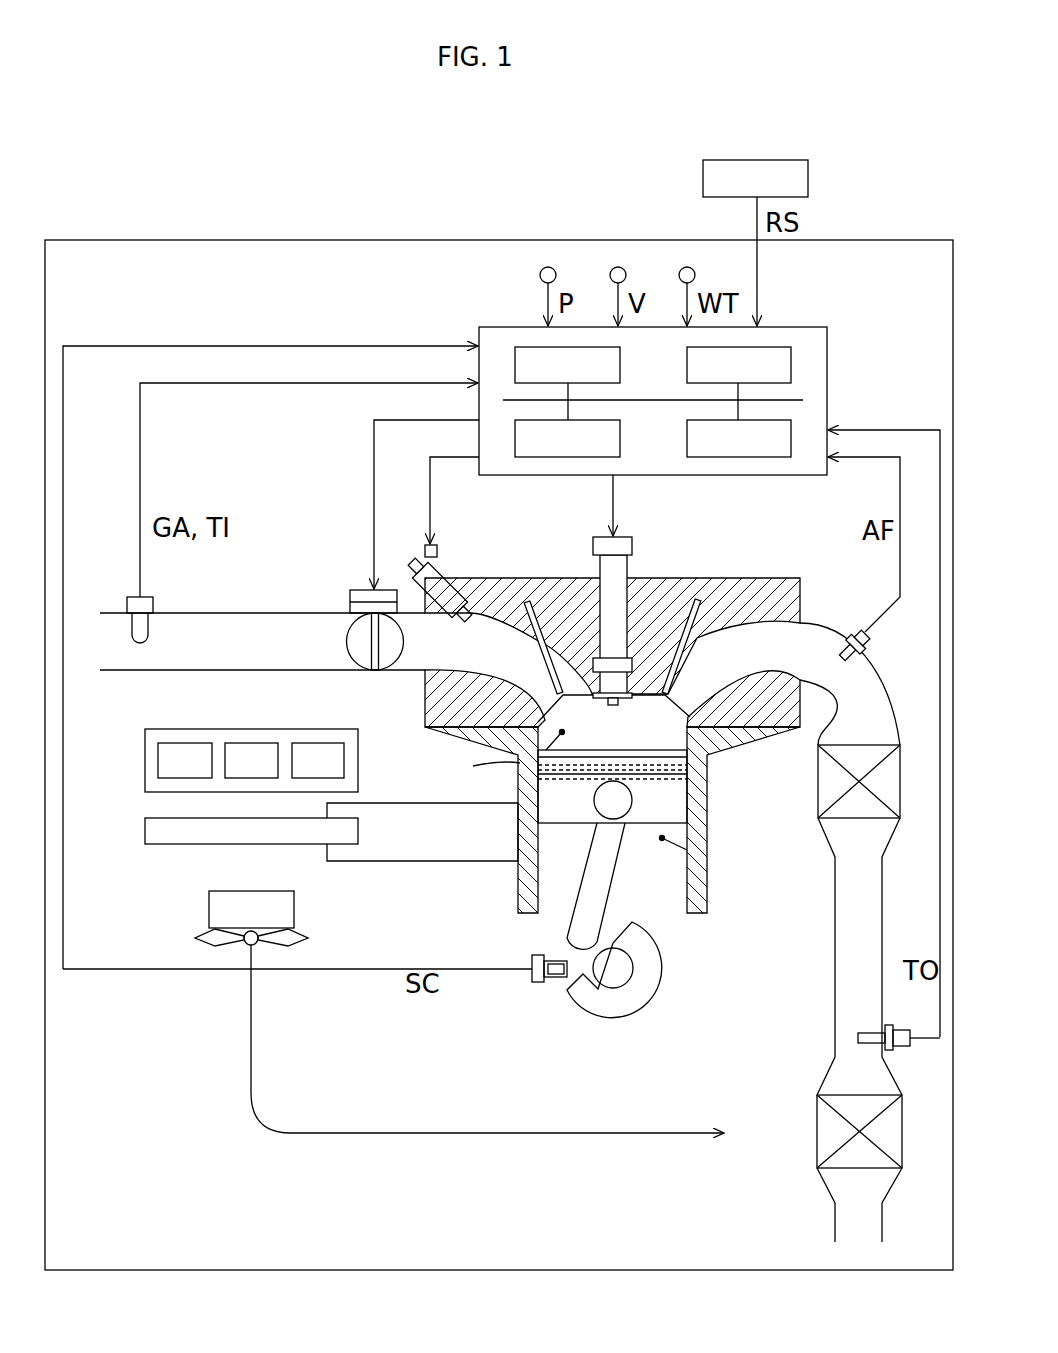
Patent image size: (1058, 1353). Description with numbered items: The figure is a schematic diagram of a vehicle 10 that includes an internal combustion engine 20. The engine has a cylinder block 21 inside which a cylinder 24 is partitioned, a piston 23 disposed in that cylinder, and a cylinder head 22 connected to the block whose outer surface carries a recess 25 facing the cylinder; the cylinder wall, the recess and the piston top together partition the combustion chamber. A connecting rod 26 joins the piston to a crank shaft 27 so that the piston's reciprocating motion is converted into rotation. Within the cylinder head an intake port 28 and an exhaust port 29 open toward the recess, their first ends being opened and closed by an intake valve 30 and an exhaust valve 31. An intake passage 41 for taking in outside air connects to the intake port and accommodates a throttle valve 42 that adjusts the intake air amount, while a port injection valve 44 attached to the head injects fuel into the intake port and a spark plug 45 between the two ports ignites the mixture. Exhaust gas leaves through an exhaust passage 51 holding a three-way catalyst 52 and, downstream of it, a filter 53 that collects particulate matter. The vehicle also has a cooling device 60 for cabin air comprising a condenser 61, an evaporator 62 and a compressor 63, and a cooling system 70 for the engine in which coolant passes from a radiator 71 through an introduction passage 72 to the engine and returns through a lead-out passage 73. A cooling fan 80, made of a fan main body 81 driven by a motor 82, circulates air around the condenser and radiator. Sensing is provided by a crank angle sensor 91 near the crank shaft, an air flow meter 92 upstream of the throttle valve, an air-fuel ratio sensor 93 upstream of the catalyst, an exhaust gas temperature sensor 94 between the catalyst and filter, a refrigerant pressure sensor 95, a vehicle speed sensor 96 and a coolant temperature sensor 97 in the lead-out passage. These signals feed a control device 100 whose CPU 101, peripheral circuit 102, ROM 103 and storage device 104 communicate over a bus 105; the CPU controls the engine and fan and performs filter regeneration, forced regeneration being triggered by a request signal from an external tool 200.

The vehicle 10 is at (78, 239).
The internal combustion engine 20 is at (178, 311).
The cylinder block 21 is at (612, 820).
The cylinder head 22 is at (589, 635).
The piston 23 is at (563, 812).
The cylinder 24 is at (707, 850).
The recess 25 is at (621, 703).
The connecting rod 26 is at (603, 866).
The crank shaft 27 is at (612, 986).
The intake port 28 is at (425, 670).
The exhaust port 29 is at (795, 648).
The intake valve 30 is at (542, 660).
The exhaust valve 31 is at (690, 652).
The intake passage 41 is at (125, 672).
The throttle valve 42 is at (347, 642).
The port injection valve 44 is at (450, 558).
The spark plug 45 is at (605, 580).
The exhaust passage 51 is at (845, 932).
The three-way catalyst 52 is at (818, 783).
The filter 53 is at (817, 1132).
The cooling device 60 is at (213, 741).
The condenser 61 is at (187, 743).
The evaporator 62 is at (252, 743).
The compressor 63 is at (318, 743).
The cooling system 70 is at (292, 860).
The radiator 71 is at (145, 830).
The introduction passage 72 is at (433, 804).
The lead-out passage 73 is at (394, 862).
The cooling fan 80 is at (189, 922).
The fan main body 81 is at (206, 940).
The motor 82 is at (209, 906).
The crank angle sensor 91 is at (532, 958).
The air flow meter 92 is at (130, 596).
The air-fuel ratio sensor 93 is at (852, 630).
The exhaust gas temperature sensor 94 is at (898, 1050).
The refrigerant pressure sensor 95 is at (541, 269).
The vehicle speed sensor 96 is at (611, 269).
The coolant temperature sensor 97 is at (680, 269).
The control device 100 is at (660, 415).
The central processing unit (CPU) 101 is at (515, 355).
The peripheral circuit 102 is at (791, 358).
The read-only memory (ROM) 103 is at (518, 437).
The storage device 104 is at (791, 455).
The bus 105 is at (647, 402).
The external tool 200 is at (808, 180).